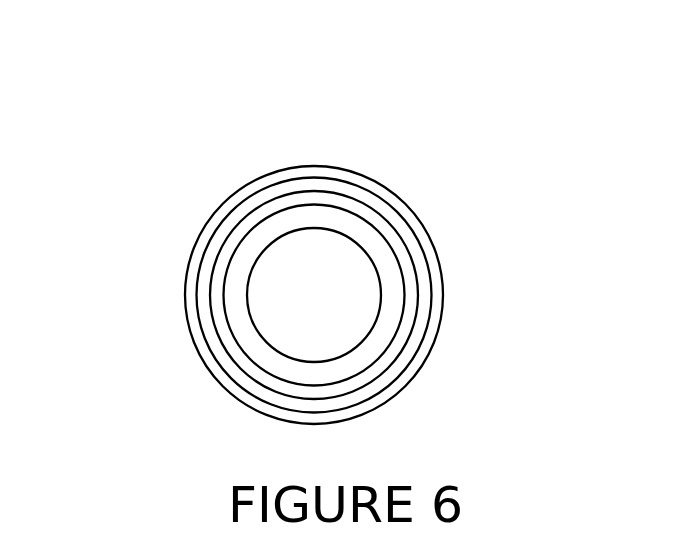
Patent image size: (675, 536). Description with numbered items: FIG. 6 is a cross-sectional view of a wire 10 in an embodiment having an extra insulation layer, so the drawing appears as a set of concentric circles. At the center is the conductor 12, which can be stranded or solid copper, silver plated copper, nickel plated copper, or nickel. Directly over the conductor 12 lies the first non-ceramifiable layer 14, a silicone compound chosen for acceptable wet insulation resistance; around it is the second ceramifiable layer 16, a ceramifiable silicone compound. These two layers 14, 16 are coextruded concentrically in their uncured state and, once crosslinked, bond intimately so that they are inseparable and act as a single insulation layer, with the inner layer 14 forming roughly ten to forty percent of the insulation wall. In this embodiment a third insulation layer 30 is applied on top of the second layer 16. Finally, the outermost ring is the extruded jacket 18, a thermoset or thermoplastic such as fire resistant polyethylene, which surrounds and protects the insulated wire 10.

The wire 10 is at (245, 126).
The conductor 12 is at (295, 322).
The first non-ceramifiable layer 14 is at (225, 323).
The second ceramifiable layer 16 is at (373, 203).
The jacket 18 is at (443, 297).
The third insulation layer 30 is at (427, 255).